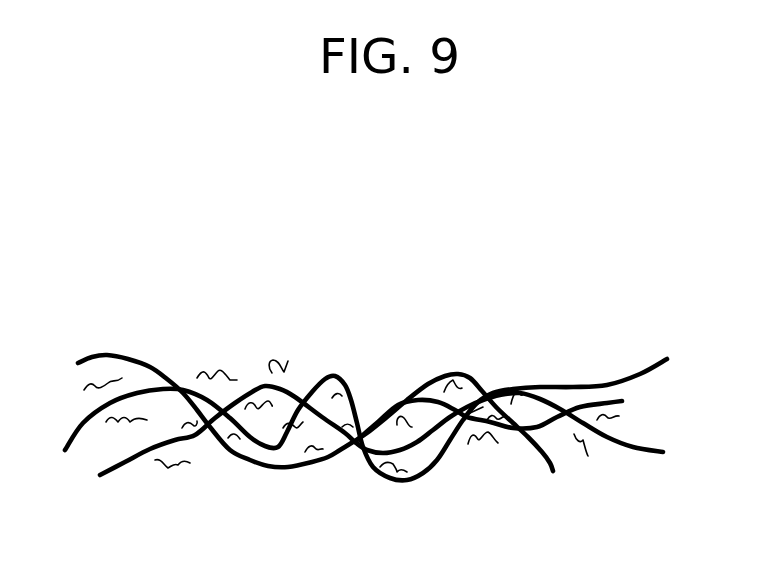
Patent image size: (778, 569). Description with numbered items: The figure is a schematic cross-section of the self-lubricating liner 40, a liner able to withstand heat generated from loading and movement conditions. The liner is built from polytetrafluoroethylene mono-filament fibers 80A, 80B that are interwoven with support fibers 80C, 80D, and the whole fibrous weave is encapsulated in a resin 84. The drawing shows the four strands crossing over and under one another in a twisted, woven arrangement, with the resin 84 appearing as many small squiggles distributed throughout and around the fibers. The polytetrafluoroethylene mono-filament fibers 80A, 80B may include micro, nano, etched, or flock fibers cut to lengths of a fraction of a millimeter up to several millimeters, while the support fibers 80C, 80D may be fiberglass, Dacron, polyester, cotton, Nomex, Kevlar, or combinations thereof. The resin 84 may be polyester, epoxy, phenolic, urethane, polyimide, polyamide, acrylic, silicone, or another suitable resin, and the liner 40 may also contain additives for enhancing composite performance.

The self-lubricating liner 40 is at (466, 275).
The polytetrafluoroethylene mono-filament fiber 80A is at (597, 387).
The polytetrafluoroethylene mono-filament fiber 80B is at (624, 402).
The support fiber 80C is at (628, 441).
The support fiber 80D is at (555, 461).
The resin 84 is at (122, 378).